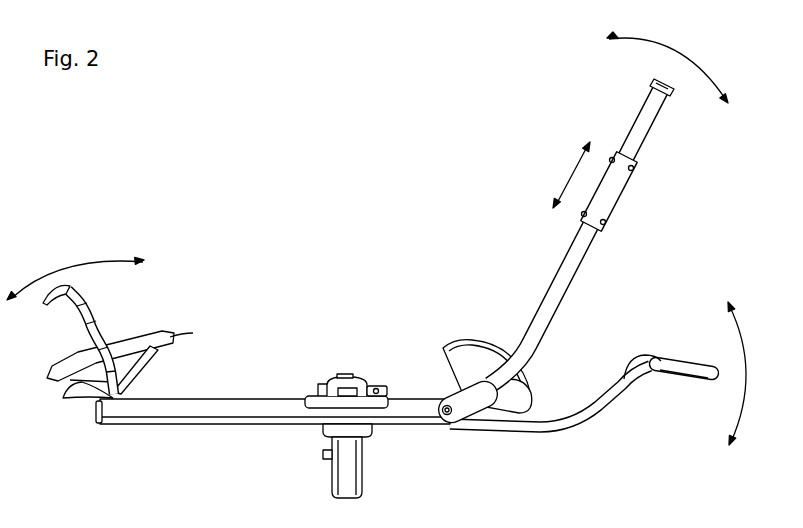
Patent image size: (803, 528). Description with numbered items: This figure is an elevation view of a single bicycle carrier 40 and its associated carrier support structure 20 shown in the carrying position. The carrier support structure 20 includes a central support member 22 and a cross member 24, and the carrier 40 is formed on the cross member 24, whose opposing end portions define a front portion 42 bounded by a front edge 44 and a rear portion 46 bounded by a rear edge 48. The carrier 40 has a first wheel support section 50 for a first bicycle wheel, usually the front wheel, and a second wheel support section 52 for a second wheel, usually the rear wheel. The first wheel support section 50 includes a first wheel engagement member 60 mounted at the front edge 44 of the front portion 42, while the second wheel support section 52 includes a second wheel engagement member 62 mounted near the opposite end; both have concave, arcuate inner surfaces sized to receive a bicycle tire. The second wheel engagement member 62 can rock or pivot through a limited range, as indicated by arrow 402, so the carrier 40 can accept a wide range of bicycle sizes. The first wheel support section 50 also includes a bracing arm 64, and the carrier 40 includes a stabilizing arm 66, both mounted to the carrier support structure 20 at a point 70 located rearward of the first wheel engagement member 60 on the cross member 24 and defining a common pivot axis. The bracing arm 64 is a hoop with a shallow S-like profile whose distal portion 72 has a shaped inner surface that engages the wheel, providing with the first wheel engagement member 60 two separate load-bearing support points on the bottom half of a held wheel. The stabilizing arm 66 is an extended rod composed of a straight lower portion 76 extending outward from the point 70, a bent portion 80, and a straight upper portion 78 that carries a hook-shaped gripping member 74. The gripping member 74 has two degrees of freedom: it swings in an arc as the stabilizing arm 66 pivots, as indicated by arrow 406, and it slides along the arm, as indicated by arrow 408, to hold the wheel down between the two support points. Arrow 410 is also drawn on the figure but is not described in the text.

The carrier support structure 20 is at (287, 354).
The central support member 22 is at (334, 377).
The cross member 24 is at (263, 421).
The carrier 40 is at (120, 381).
The front portion 42 is at (402, 437).
The front edge 44 is at (532, 411).
The rear portion 46 is at (217, 434).
The rear edge 48 is at (97, 412).
The first wheel support section 50 is at (420, 381).
The second wheel support section 52 is at (36, 392).
The first wheel engagement member 60 is at (484, 348).
The second wheel engagement member 62 is at (178, 340).
The bracing arm 64 is at (581, 399).
The stabilizing arm 66 is at (582, 232).
The mounting point 70 is at (449, 432).
The distal portion 72 is at (686, 347).
The gripping member 74 is at (630, 190).
The straight lower portion 76 is at (486, 362).
The straight upper portion 78 is at (506, 347).
The bent portion 80 is at (615, 247).
The arrow 402 is at (63, 258).
The arrow 406 is at (680, 55).
The arrow 408 is at (567, 183).
The grip swing direction arrow 410 is at (748, 343).